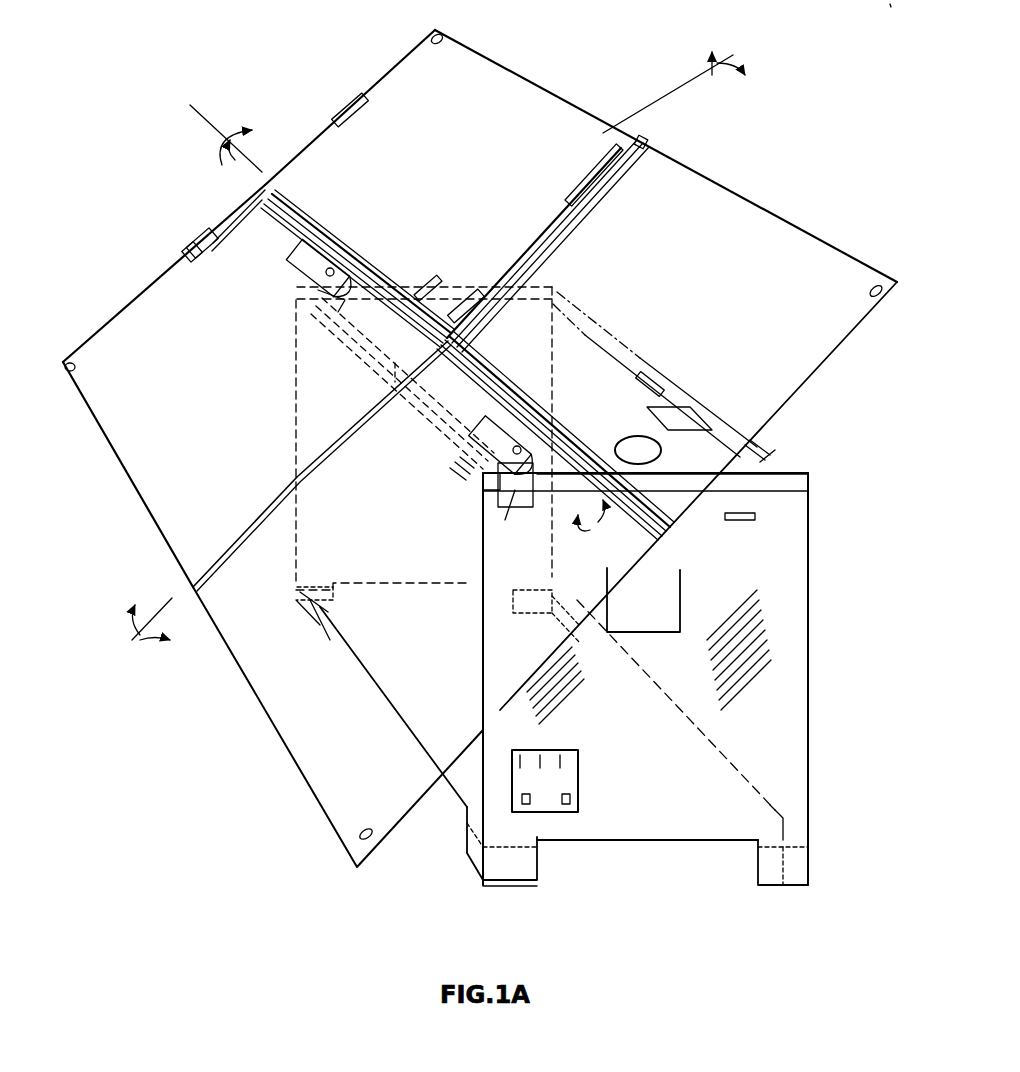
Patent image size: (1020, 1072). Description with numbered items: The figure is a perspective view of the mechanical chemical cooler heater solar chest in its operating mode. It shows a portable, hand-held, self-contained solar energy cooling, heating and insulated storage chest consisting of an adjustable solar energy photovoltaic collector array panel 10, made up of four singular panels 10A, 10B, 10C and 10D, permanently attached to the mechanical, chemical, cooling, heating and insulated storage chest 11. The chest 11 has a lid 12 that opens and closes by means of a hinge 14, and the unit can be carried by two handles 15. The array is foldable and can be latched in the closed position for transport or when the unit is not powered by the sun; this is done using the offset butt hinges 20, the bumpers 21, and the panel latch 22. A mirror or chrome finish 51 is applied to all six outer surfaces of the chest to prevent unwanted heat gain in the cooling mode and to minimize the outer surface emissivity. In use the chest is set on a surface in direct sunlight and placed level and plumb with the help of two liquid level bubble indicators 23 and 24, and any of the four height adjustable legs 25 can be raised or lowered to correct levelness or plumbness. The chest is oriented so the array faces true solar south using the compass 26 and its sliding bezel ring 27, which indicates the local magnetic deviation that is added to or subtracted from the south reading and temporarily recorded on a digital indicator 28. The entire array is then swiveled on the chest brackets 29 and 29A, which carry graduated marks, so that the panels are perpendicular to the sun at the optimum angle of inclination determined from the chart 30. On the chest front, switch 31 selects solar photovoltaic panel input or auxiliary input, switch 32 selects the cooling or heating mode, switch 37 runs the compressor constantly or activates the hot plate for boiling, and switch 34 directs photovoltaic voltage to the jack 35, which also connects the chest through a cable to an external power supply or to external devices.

The solar energy photovoltaic collector array panel 10 is at (627, 133).
The singular panel 10A is at (581, 176).
The singular panel 10B is at (698, 427).
The singular panel 10C is at (257, 388).
The singular panel 10D is at (338, 727).
The storage chest 11 is at (810, 695).
The lid 12 is at (812, 477).
The hinge 14 is at (460, 478).
The handles 15 is at (692, 583).
The offset butt hinges 20 is at (582, 182).
The bumpers 21 is at (448, 38).
The panel latch 22 is at (227, 247).
The liquid level bubble indicator 23 is at (762, 516).
The liquid level bubble indicator 24 is at (762, 445).
The height adjustable legs 25 is at (310, 630).
The compass 26 is at (634, 447).
The sliding bezel ring 27 is at (664, 452).
The digital indicator 28 is at (652, 382).
The chest bracket 29 is at (305, 262).
The chest bracket 29A is at (338, 305).
The chart 30 is at (702, 420).
The switch 31 is at (528, 748).
The switch 32 is at (556, 732).
The switch 34 is at (580, 758).
The jack 35 is at (533, 812).
The switch 37 is at (582, 812).
The mirror or chrome finish 51 is at (752, 640).